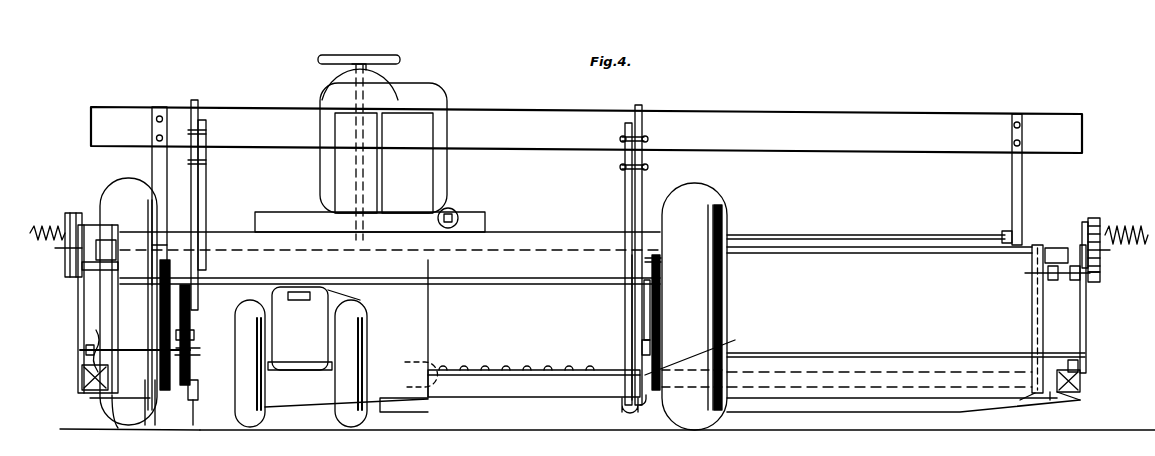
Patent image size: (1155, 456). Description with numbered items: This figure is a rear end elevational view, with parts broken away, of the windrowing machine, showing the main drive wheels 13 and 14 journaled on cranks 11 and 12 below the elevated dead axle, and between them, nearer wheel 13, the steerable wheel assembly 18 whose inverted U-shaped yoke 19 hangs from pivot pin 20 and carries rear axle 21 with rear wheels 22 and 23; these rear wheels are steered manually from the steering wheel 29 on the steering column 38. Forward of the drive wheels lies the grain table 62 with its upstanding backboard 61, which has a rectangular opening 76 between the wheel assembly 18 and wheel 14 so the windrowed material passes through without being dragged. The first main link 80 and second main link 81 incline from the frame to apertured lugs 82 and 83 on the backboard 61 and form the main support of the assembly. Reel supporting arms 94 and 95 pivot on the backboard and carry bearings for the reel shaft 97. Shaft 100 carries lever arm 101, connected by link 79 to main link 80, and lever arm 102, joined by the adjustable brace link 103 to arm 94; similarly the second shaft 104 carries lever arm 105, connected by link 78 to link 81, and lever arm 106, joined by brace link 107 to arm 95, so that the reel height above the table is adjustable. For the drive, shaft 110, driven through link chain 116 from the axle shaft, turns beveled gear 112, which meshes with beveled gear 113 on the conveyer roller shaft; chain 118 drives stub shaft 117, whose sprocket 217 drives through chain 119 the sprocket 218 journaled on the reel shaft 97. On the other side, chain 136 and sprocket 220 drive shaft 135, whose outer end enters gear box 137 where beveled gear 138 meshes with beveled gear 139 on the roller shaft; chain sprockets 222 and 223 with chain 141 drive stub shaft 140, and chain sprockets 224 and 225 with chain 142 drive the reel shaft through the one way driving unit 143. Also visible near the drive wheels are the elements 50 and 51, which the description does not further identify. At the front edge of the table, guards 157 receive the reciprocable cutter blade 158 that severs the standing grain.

The crank 11 is at (183, 232).
The crank 12 is at (645, 232).
The main drive wheel 13 is at (150, 426).
The main drive wheel 14 is at (690, 430).
The steerable wheel assembly 18 is at (248, 232).
The yoke 19 is at (325, 318).
The pivot pin 20 is at (272, 293).
The rear axle 21 is at (305, 362).
The rear wheel 22 is at (243, 428).
The rear wheel 23 is at (350, 428).
The steering wheel 29 is at (396, 62).
The steering column 38 is at (398, 80).
The clutch plate 50 is at (158, 300).
The clutch drum 51 is at (661, 268).
The backboard 61 is at (429, 312).
The grain table 62 is at (442, 367).
The rectangular opening 76 is at (495, 375).
The link 78 is at (633, 336).
The link 79 is at (196, 336).
The first main link 80 is at (200, 313).
The second main link 81 is at (626, 312).
The apertured lug 82 is at (622, 410).
The apertured lug 83 is at (191, 425).
The reel supporting arm 94 is at (88, 218).
The reel supporting arm 95 is at (1087, 222).
The reel shaft 97 is at (865, 237).
The shaft 100 is at (96, 330).
The lever arm 101 is at (192, 348).
The lever arm 102 is at (82, 351).
The brace link 103 is at (76, 293).
The second shaft 104 is at (883, 353).
The lever arm 105 is at (636, 345).
The lever arm 106 is at (1080, 366).
The brace link 107 is at (1087, 318).
The shaft 110 is at (114, 412).
The beveled gear 112 is at (100, 398).
The beveled gear 113 is at (82, 380).
The link chain 116 is at (178, 355).
The stub shaft 117 is at (98, 228).
The chain 118 is at (112, 313).
The chain 119 is at (70, 250).
The shaft 135 is at (985, 356).
The chain 136 is at (735, 340).
The gear box 137 is at (1082, 385).
The beveled gear 138 is at (1052, 398).
The beveled gear 139 is at (1080, 398).
The stub shaft 140 is at (1063, 281).
The chain 141 is at (1032, 312).
The chain 142 is at (1102, 252).
The one way driving unit 143 is at (1122, 217).
The guard 157 is at (466, 367).
The cutter blade 158 is at (553, 367).
The sprocket 217 is at (72, 268).
The sprocket 218 is at (68, 215).
The sprocket 220 is at (646, 410).
The chain sprocket 222 is at (1030, 398).
The chain sprocket 223 is at (1030, 258).
The chain sprocket 224 is at (1101, 270).
The chain sprocket 225 is at (1084, 218).